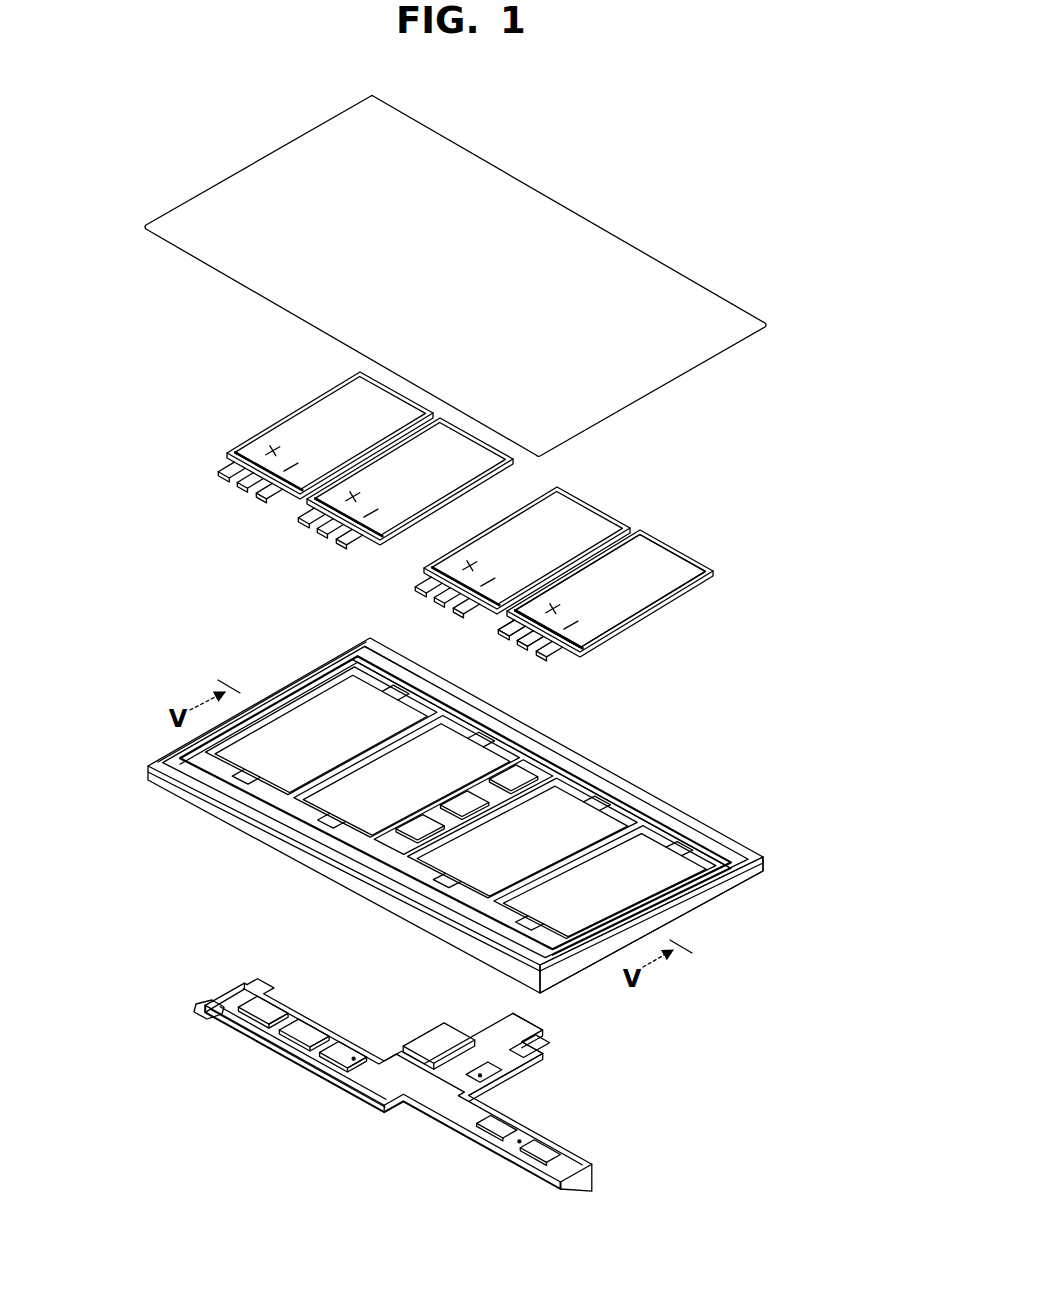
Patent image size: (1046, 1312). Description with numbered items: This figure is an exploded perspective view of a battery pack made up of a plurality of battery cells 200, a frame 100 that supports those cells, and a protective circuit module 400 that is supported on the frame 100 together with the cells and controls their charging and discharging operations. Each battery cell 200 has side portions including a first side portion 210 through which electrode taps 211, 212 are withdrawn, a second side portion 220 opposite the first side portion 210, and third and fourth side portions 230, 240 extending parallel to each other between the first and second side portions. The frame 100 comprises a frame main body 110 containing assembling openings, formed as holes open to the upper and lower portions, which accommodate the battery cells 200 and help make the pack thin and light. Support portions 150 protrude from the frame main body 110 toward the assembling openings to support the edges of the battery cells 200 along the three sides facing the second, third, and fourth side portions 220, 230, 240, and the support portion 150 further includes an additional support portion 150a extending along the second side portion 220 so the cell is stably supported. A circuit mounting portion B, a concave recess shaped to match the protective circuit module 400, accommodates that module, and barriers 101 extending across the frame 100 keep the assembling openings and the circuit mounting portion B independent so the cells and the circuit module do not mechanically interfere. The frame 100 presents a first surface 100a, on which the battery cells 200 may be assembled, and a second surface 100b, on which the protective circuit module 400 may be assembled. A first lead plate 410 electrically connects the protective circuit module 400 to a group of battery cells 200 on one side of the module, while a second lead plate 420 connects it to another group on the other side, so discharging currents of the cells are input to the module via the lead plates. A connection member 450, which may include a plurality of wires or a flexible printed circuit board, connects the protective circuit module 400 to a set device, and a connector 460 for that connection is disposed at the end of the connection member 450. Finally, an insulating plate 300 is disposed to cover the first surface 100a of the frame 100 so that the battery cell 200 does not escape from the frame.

The frame 100 is at (441, 795).
The first surface 100a is at (290, 693).
The second surface 100b is at (718, 895).
The barrier 101 is at (622, 825).
The frame main body 110 is at (180, 760).
The support portion 150 is at (340, 672).
The additional support portion 150a is at (400, 677).
The battery cell 200 is at (662, 558).
The first side portion 210 is at (578, 662).
The electrode tap 211 is at (527, 625).
The electrode tap 212 is at (548, 642).
The second side portion 220 is at (604, 611).
The third side portion 230 is at (563, 570).
The fourth side portion 240 is at (657, 627).
The insulating plate 300 is at (550, 205).
The protective circuit module 400 is at (369, 1074).
The first lead plate 410 is at (422, 1047).
The second lead plate 420 is at (510, 1073).
The connection member 450 is at (273, 1050).
The connector 460 is at (200, 1008).
The circuit mounting portion B is at (413, 837).